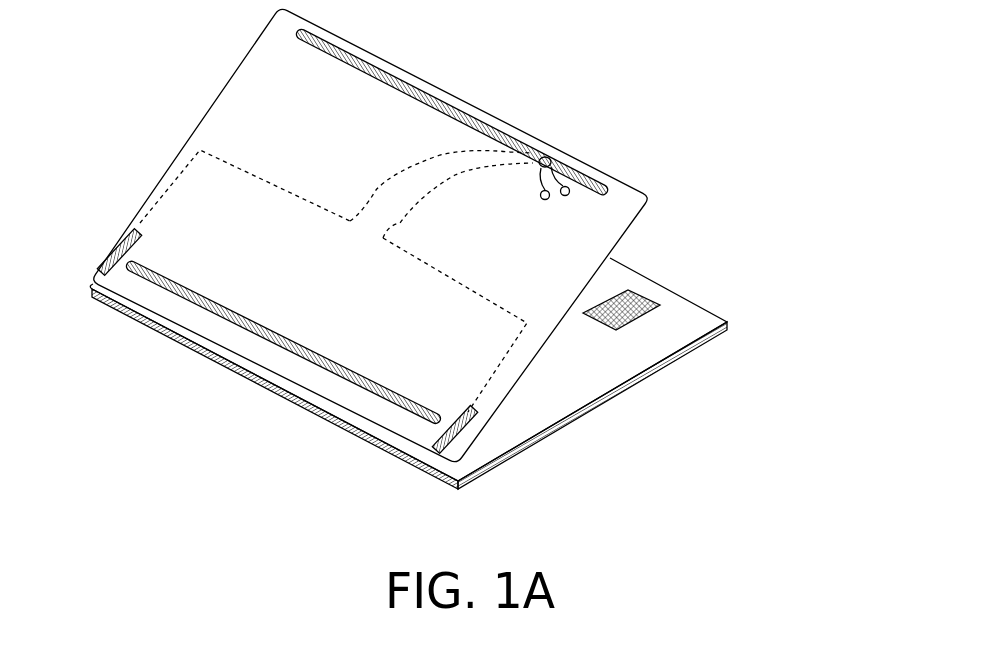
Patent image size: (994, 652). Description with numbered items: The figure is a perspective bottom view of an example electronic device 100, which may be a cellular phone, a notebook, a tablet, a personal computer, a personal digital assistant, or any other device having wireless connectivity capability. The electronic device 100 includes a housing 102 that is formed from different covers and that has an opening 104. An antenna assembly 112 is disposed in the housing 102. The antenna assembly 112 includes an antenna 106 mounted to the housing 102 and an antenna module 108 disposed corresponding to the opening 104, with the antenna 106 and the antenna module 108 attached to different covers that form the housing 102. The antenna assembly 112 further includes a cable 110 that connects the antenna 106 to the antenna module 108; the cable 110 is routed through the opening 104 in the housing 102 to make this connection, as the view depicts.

The electronic device 100 is at (473, 290).
The housing 102 is at (632, 226).
The opening 104 is at (580, 157).
The antenna 106 is at (465, 424).
The antenna module 108 is at (652, 318).
The cable 110 is at (507, 360).
The antenna assembly 112 is at (795, 316).